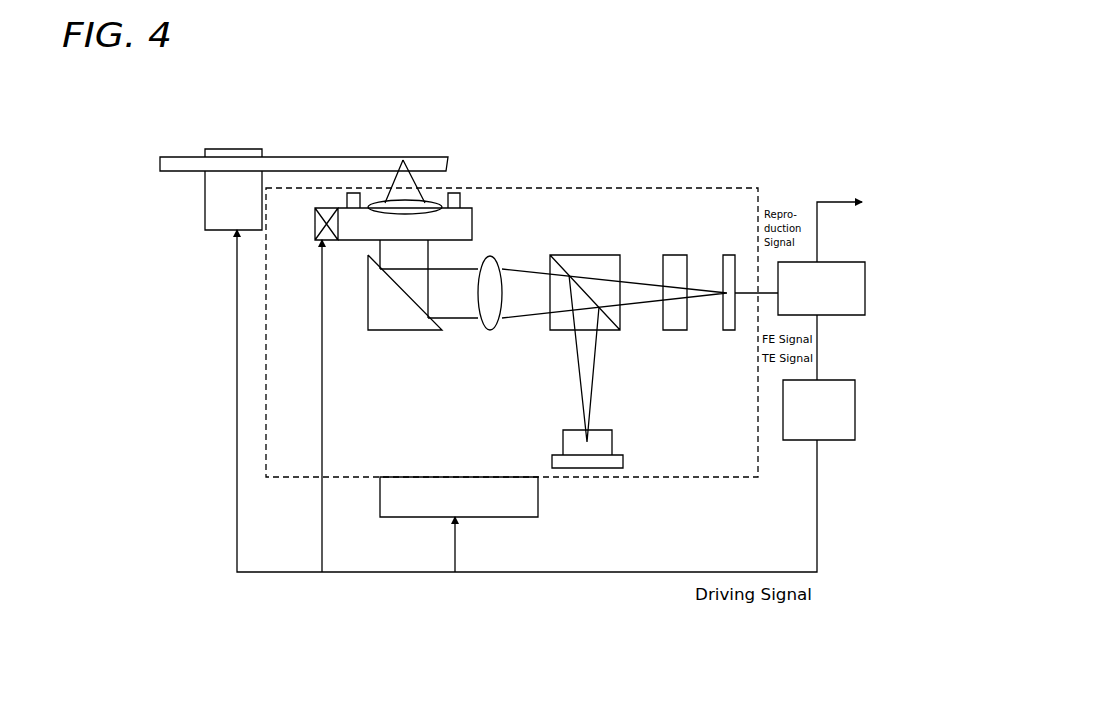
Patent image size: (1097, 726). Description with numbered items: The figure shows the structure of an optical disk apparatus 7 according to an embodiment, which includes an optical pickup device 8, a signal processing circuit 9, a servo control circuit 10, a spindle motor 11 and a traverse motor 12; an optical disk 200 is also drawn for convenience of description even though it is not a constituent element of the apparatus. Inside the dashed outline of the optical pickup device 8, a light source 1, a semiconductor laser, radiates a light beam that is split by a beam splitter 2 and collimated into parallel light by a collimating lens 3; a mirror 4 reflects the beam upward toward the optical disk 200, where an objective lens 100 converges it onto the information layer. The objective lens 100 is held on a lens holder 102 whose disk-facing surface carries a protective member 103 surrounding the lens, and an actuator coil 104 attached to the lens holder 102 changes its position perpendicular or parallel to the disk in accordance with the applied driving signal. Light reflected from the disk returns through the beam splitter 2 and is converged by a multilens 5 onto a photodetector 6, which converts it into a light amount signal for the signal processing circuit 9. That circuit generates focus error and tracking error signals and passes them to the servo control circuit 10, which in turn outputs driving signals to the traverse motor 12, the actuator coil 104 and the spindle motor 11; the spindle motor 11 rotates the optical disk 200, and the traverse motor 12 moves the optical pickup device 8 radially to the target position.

The light source 1 is at (570, 442).
The beam splitter 2 is at (587, 268).
The collimating lens 3 is at (492, 318).
The mirror 4 is at (393, 318).
The multilens 5 is at (670, 268).
The photodetector 6 is at (728, 317).
The optical disk apparatus 7 is at (570, 146).
The optical pickup device 8 is at (607, 188).
The signal processing circuit 9 is at (865, 288).
The servo control circuit 10 is at (855, 410).
The spindle motor 11 is at (205, 198).
The traverse motor 12 is at (540, 490).
The objective lens 100 is at (392, 210).
The lens holder 102 is at (460, 225).
The protective member 103 is at (453, 195).
The actuator coil 104 is at (315, 214).
The optical disk 200 is at (343, 167).